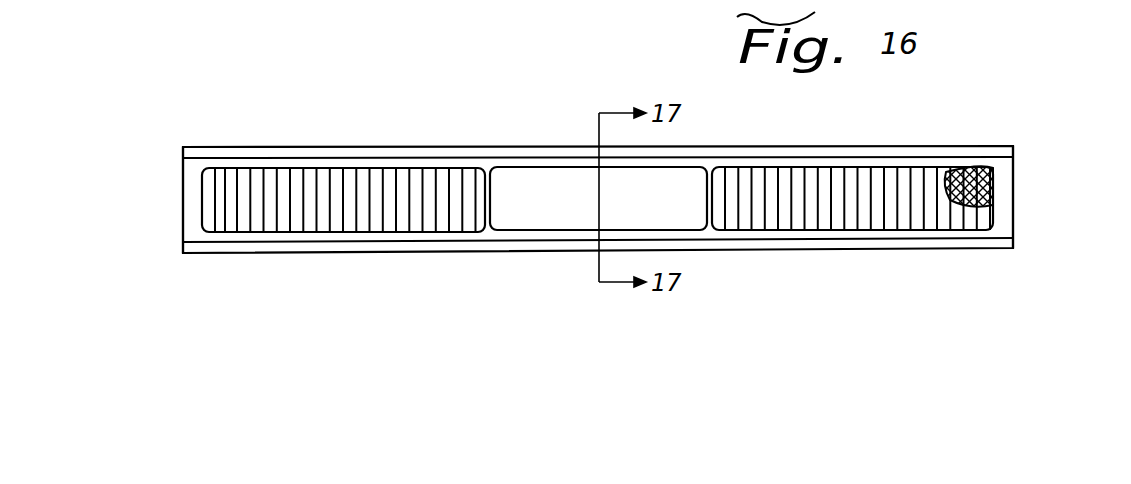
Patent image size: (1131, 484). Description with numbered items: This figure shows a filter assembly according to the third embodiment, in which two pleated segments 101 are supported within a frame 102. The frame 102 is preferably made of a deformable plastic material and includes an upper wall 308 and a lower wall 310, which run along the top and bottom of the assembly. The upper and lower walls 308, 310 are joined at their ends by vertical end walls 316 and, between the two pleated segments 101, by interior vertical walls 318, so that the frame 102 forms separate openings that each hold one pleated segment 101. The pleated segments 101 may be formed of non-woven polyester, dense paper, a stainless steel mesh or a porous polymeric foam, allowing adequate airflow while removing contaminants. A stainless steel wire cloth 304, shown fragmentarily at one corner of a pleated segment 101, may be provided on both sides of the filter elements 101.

The frame 102 is at (203, 148).
The pleated segment 101 is at (347, 178).
The upper wall 308 is at (457, 157).
The lower wall 310 is at (483, 242).
The vertical end wall 316 is at (183, 240).
The interior vertical wall 318 is at (493, 199).
The stainless steel wire cloth 304 is at (982, 167).